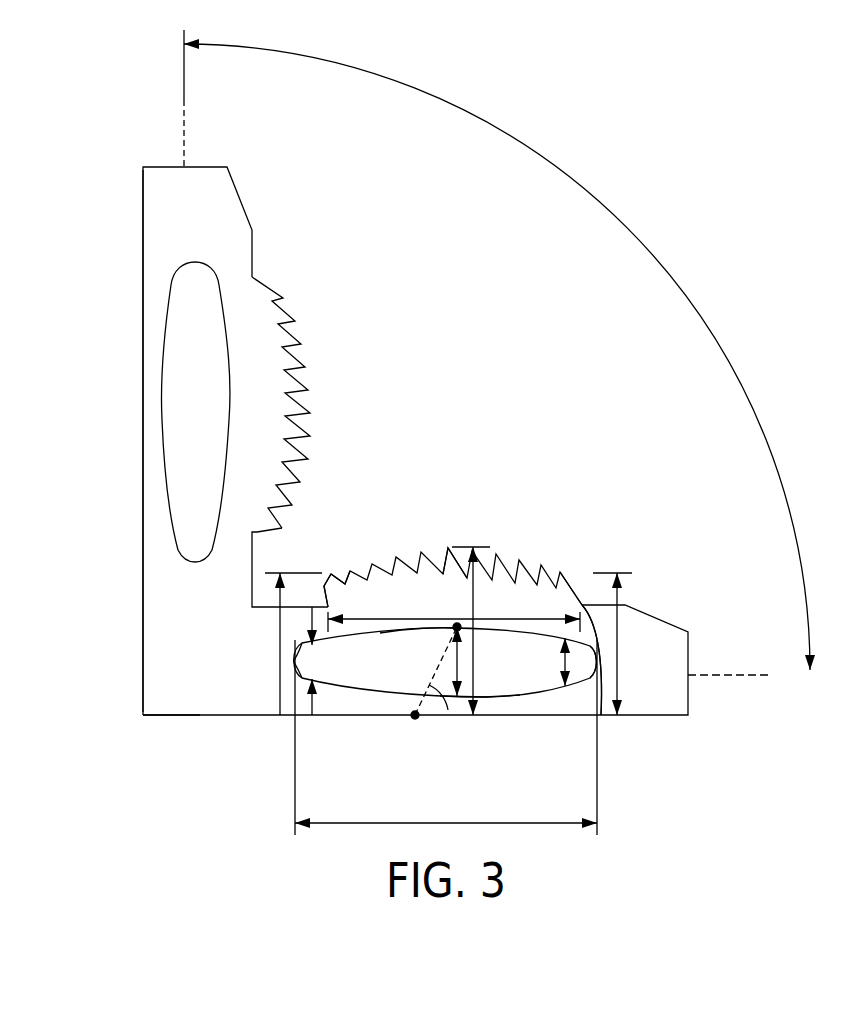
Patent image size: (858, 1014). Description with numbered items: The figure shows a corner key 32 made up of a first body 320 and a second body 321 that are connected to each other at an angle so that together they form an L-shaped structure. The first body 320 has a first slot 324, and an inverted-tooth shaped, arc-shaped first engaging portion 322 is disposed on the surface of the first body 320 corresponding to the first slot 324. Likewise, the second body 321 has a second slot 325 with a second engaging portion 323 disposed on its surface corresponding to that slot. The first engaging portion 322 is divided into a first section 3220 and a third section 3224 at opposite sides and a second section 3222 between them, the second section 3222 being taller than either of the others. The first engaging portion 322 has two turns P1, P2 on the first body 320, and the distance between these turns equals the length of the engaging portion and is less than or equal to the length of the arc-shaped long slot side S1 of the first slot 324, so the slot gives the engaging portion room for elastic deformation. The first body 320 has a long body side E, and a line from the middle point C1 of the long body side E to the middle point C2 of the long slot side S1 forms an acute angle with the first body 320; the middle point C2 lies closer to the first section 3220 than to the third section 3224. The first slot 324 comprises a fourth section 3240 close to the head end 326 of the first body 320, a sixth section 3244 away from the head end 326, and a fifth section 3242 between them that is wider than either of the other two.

The corner key 32 is at (490, 327).
The first body 320 is at (641, 719).
The second body 321 is at (142, 290).
The first engaging portion 322 is at (569, 565).
The first section 3220 is at (579, 582).
The second section 3222 is at (450, 548).
The third section 3224 is at (330, 578).
The second engaging portion 323 is at (310, 322).
The first slot 324 is at (294, 662).
The fourth section 3240 is at (578, 666).
The fifth section 3242 is at (460, 665).
The sixth section 3244 is at (298, 660).
The second slot 325 is at (183, 262).
The head end 326 is at (693, 668).
The turn P1 is at (601, 715).
The turn P2 is at (312, 578).
The long slot side S1 is at (408, 630).
The middle point of the long body side C1 is at (425, 730).
The middle point of the long slot side C2 is at (456, 625).
The long body side E is at (158, 718).